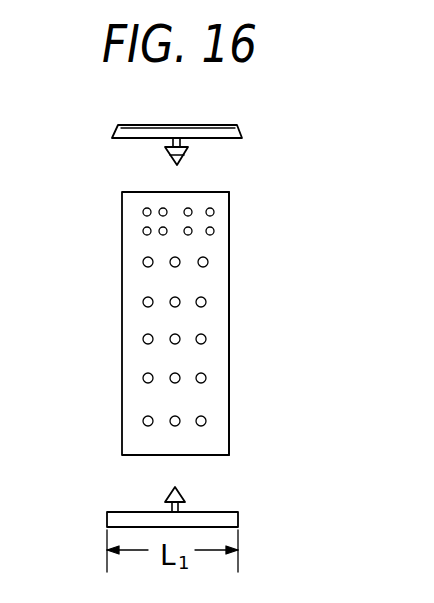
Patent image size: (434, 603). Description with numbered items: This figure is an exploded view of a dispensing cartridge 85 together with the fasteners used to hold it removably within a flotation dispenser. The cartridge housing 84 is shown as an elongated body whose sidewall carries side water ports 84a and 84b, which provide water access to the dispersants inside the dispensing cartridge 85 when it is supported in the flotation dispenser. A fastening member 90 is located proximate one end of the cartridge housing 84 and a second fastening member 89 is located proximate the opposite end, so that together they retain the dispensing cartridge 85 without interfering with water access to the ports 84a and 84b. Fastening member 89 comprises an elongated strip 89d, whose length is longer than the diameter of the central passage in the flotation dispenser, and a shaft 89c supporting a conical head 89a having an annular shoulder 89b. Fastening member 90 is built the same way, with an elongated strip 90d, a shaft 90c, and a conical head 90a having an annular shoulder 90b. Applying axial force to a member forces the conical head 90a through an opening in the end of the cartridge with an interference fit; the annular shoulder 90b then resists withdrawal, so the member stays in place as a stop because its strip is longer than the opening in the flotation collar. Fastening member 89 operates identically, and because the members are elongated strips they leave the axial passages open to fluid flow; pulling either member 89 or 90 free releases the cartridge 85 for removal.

The cartridge housing 84 is at (230, 267).
The side water port 84a is at (142, 230).
The side water port 84b is at (142, 417).
The dispensing cartridge 85 is at (230, 348).
The fastening member 89 is at (215, 512).
The conical head 89a is at (180, 498).
The annular shoulder 89b is at (167, 507).
The shaft 89c is at (168, 508).
The elongated strip 89d is at (238, 520).
The fastening member 90 is at (234, 127).
The conical head 90a is at (180, 165).
The annular shoulder 90b is at (184, 146).
The shaft 90c is at (173, 143).
The elongated strip 90d is at (152, 126).